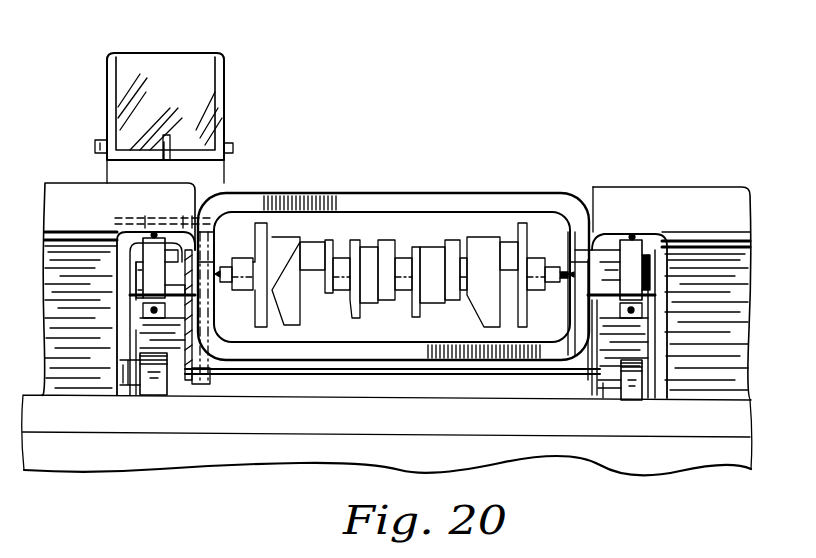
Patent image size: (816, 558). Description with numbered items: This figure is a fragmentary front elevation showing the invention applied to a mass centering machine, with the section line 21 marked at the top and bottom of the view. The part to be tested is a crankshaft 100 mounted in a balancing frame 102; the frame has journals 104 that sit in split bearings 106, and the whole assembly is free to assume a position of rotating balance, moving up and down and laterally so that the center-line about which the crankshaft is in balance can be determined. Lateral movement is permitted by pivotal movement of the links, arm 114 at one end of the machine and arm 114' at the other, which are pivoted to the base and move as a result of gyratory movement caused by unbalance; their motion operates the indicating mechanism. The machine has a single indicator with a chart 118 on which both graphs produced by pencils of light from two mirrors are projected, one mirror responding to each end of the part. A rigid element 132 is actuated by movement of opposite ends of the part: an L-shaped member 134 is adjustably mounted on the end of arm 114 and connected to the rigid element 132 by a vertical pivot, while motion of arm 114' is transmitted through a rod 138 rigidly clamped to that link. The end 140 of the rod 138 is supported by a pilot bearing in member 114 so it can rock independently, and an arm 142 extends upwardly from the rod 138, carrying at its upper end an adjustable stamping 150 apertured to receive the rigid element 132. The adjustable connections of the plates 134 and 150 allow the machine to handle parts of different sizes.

The section line 21- 21 is at (186, 28).
The crankshaft 100 is at (380, 248).
The frame 102 is at (456, 200).
The journals 104 is at (142, 272).
The split bearings 106 is at (152, 284).
The arm 114 is at (127, 356).
The arm 114' is at (656, 357).
The chart 118 is at (205, 82).
The rigid element 132 is at (118, 222).
The L-shaped member 134 is at (147, 224).
The rod 138 is at (530, 378).
The end of the rod 140 is at (195, 376).
The arm 142 is at (213, 378).
The stamping 150 is at (190, 222).